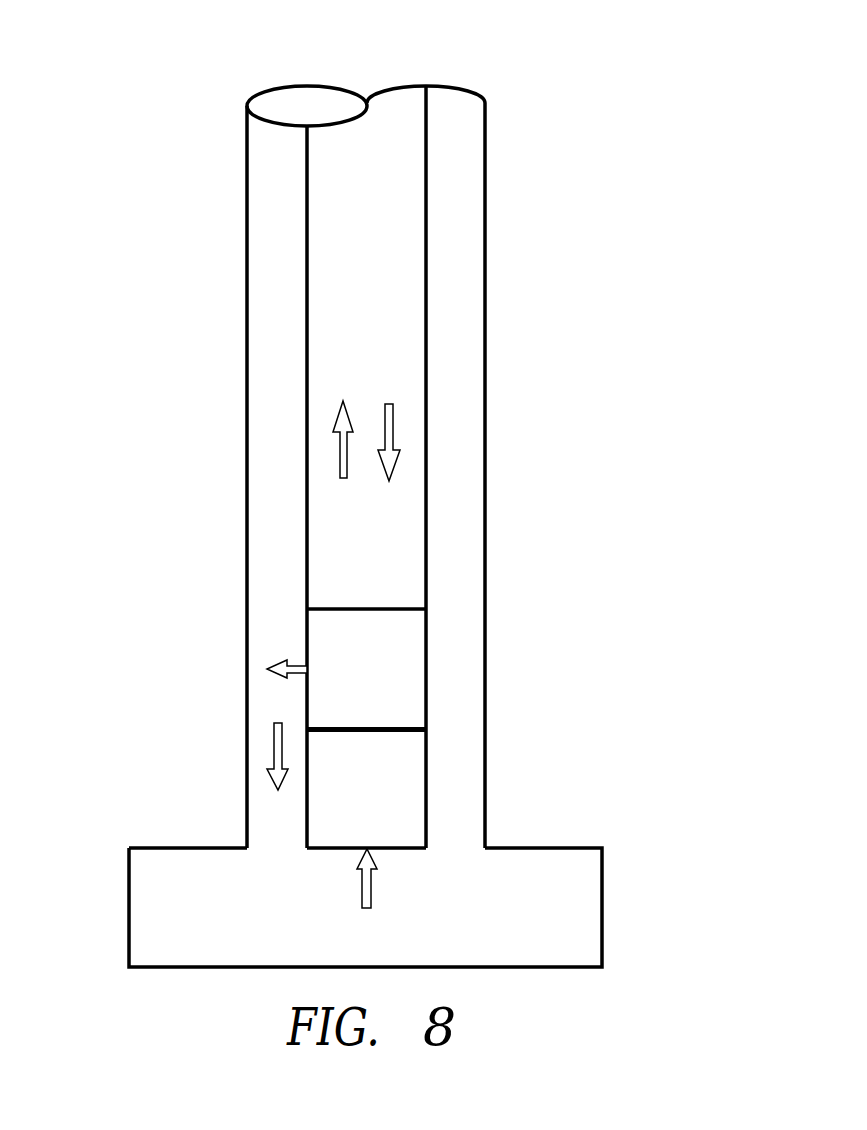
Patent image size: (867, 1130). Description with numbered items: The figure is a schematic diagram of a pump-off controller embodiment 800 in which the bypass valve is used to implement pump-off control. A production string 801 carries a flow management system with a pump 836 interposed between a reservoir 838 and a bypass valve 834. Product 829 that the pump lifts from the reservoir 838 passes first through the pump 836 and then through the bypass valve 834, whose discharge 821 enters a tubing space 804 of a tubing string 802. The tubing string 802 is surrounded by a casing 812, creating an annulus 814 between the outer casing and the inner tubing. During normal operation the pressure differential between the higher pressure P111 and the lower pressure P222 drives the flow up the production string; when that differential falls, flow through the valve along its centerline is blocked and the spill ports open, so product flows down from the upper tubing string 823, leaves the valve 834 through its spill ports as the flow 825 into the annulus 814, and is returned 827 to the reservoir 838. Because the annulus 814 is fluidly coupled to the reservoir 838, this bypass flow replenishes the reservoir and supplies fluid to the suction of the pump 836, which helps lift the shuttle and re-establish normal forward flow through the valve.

The pump-off controller embodiment 800 is at (122, 192).
The production string 801 is at (552, 375).
The tubing string 802 is at (427, 250).
The tubing space 804 is at (389, 347).
The casing 812 is at (247, 250).
The annulus 814 is at (283, 355).
The bypass valve discharge flow 821 is at (343, 440).
The flow from the upper tubing string 823 is at (388, 440).
The valve outflow 825 is at (297, 665).
The return flow to the reservoir 827 is at (277, 740).
The product lifted from the reservoir 829 is at (365, 889).
The bypass valve 834 is at (388, 711).
The pump 836 is at (388, 828).
The reservoir 838 is at (580, 956).
The upstream pressure P111 is at (398, 730).
The downstream pressure P222 is at (373, 538).